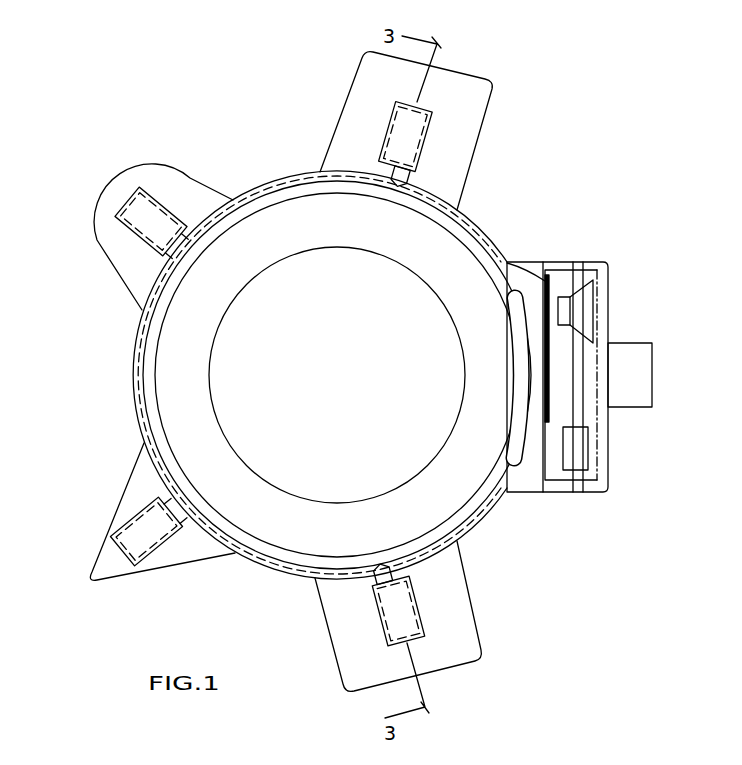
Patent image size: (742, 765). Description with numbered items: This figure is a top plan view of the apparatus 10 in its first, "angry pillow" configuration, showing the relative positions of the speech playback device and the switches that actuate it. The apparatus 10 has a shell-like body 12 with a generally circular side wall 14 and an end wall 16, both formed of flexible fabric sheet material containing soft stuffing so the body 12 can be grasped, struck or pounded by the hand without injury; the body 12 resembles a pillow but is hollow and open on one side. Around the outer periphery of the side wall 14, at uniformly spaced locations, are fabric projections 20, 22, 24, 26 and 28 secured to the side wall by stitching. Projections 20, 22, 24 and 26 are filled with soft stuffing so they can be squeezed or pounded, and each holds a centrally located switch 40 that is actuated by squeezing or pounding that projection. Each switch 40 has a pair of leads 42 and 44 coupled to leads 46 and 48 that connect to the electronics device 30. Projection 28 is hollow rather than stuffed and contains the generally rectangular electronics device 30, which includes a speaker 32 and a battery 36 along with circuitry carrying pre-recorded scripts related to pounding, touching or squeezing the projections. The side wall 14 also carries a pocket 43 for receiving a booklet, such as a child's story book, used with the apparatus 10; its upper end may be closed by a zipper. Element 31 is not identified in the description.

The apparatus 10 is at (302, 137).
The shell-like body 12 is at (266, 186).
The side wall 14 is at (480, 227).
The end wall 16 is at (342, 393).
The projection 20 is at (358, 75).
The projection 22 is at (195, 175).
The projection 24 is at (124, 490).
The projection 26 is at (483, 658).
The projection 28 is at (549, 492).
The electronics device 30 is at (585, 262).
The connector block 31 is at (653, 353).
The speaker 32 is at (600, 283).
The battery 36 is at (600, 443).
The switch 40 is at (422, 111).
The lead 42 is at (410, 180).
The pocket 43 is at (524, 448).
The lead 44 is at (374, 178).
The lead 46 is at (541, 278).
The lead 48 is at (505, 270).